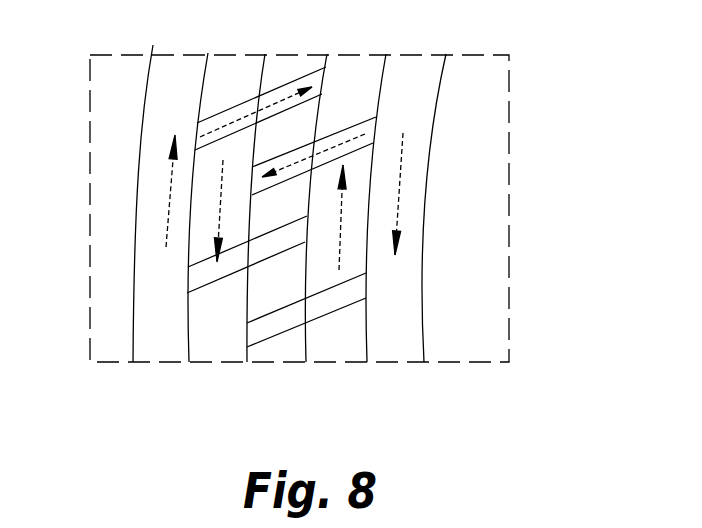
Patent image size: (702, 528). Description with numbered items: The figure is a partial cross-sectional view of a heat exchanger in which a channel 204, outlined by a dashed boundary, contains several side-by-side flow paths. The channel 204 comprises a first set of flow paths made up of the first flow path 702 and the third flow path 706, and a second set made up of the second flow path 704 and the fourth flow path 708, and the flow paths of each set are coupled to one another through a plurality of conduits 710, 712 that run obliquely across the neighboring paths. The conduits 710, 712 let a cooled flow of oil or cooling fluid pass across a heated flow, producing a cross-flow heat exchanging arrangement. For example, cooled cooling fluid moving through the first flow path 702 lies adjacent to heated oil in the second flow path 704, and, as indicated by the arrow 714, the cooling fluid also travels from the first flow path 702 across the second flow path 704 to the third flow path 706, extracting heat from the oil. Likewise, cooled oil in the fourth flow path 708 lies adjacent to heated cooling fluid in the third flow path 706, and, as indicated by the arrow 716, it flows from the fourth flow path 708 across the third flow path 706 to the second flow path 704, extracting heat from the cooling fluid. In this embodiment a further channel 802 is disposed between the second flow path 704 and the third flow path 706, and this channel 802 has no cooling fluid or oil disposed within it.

The channel 204 is at (455, 143).
The first flow path 702 is at (180, 347).
The second flow path 704 is at (237, 350).
The third flow path 706 is at (363, 350).
The fourth flow path 708 is at (414, 348).
The channel 802 is at (297, 296).
The conduit 710 is at (260, 97).
The conduit 712 is at (378, 136).
The arrow 714 is at (223, 120).
The arrow 716 is at (377, 136).